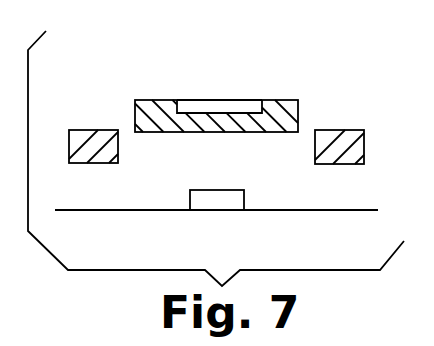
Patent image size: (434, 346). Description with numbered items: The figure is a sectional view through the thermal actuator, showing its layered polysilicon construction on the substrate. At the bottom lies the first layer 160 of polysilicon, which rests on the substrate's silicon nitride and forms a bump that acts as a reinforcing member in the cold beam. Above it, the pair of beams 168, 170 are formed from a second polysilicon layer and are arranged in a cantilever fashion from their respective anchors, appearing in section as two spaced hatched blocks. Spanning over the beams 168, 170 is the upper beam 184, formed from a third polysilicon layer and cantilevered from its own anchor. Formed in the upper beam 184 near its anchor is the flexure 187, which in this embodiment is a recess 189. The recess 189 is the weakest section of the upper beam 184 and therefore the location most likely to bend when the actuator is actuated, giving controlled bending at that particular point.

The first layer 160 is at (213, 200).
The beam 168 is at (78, 135).
The beam 170 is at (349, 135).
The upper beam 184 is at (279, 113).
The flexure 187 is at (203, 110).
The recess 189 is at (262, 103).